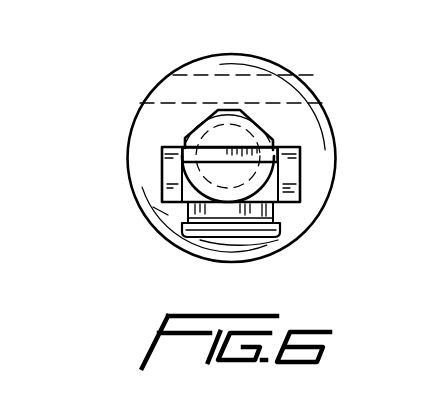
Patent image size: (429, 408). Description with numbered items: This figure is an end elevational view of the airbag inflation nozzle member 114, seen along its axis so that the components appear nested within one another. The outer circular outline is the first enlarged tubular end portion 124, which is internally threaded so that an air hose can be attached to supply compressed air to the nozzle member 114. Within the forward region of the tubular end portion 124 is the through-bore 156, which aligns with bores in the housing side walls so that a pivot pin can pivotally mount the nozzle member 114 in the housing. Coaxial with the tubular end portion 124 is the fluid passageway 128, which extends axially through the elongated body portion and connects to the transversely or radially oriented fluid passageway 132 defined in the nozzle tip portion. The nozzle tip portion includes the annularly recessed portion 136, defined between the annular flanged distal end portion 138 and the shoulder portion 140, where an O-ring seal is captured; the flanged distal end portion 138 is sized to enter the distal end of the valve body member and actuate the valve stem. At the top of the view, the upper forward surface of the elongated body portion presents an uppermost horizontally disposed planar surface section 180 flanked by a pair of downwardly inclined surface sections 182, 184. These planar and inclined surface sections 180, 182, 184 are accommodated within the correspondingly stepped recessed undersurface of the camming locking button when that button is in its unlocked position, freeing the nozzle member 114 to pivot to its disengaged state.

The airbag inflation nozzle member 114 is at (130, 172).
The first enlarged tubular end portion 124 is at (334, 141).
The fluid passageway 128 is at (183, 143).
The transversely or radially oriented fluid passageway 132 is at (268, 243).
The annularly recessed portion 136 is at (276, 212).
The annular flanged distal end portion 138 is at (286, 246).
The shoulder portion 140 is at (163, 227).
The through-bore 156 is at (283, 90).
The uppermost horizontally disposed planar surface section 180 is at (230, 110).
The downwardly inclined surface section 182 is at (197, 126).
The downwardly inclined surface section 184 is at (263, 119).